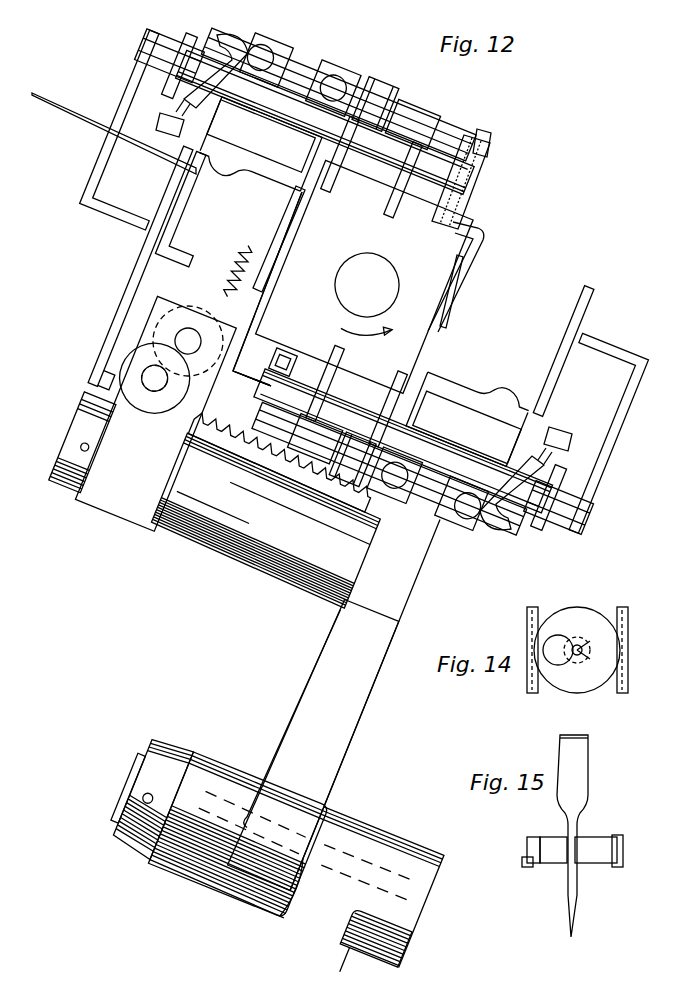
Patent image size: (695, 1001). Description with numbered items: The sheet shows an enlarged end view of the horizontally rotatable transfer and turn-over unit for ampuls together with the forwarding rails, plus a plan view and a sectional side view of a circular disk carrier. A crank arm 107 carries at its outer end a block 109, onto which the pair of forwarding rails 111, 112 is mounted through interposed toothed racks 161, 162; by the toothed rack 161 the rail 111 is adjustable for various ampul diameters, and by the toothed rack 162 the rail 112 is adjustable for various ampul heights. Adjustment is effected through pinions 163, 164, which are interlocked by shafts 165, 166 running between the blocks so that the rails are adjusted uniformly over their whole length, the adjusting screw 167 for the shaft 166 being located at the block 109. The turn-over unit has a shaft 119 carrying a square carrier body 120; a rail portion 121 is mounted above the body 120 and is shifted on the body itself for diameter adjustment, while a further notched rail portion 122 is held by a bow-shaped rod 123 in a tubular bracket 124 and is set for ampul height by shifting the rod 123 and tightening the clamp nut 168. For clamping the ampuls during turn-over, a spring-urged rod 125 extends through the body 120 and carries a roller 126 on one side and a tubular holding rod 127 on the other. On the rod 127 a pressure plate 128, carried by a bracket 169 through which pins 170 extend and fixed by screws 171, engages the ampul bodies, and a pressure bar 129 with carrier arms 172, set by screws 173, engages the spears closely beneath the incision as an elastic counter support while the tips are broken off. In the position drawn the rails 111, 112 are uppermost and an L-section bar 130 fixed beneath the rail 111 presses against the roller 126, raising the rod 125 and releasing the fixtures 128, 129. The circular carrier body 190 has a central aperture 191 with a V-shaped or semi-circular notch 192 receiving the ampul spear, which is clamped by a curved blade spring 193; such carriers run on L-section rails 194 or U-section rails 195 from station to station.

In FIG. 12, the crank arm 107 is at (328, 616).
In FIG. 12, the connecting block 109 is at (102, 504).
In FIG. 12, the forwarding rail 111 is at (288, 232).
In FIG. 12, the forwarding rail 112 is at (172, 200).
In FIG. 12, the shaft 119 is at (396, 272).
In FIG. 12, the carrier body 120 is at (484, 242).
In FIG. 12, the rail portion 121 is at (470, 270).
In FIG. 12, the rail portion 122 is at (148, 188).
In FIG. 12, the bow-shaped rod 123 is at (124, 92).
In FIG. 12, the bracket 124 is at (220, 106).
In FIG. 12, the rod 125 is at (478, 181).
In FIG. 12, the roller 126 is at (490, 136).
In FIG. 12, the tubular holding rod 127 is at (296, 60).
In FIG. 12, the pressure plate 128 is at (222, 162).
In FIG. 12, the pressure bar 129 is at (166, 116).
In FIG. 12, the L-section bar 130 is at (236, 378).
In FIG. 12, the toothed rack 161 is at (232, 276).
In FIG. 12, the toothed rack 162 is at (302, 458).
In FIG. 12, the pinion 163 is at (184, 304).
In FIG. 12, the pinion 164 is at (150, 390).
In FIG. 12, the shaft 165 is at (190, 330).
In FIG. 12, the shaft 166 is at (158, 392).
In FIG. 12, the adjusting screw 167 is at (132, 400).
In FIG. 12, the clamp nut 168 is at (188, 36).
In FIG. 12, the bracket 169 is at (372, 84).
In FIG. 12, the pin 170 is at (270, 128).
In FIG. 12, the screw 171 is at (333, 76).
In FIG. 12, the carrier arm 172 is at (228, 40).
In FIG. 12, the screw 173 is at (258, 44).
In FIG. 14, the circular carrier body 190 is at (588, 608).
In FIG. 15, the circular carrier body 190 is at (594, 838).
In FIG. 14, the aperture 191 is at (555, 640).
In FIG. 15, the aperture 191 is at (552, 863).
In FIG. 14, the notch 192 is at (584, 642).
In FIG. 15, the notch 192 is at (576, 862).
In FIG. 14, the blade spring 193 is at (568, 662).
In FIG. 15, the blade spring 193 is at (535, 838).
In FIG. 14, the L-section rail 194 is at (534, 692).
In FIG. 15, the L-section rail 194 is at (524, 866).
In FIG. 14, the U-section rail 195 is at (618, 690).
In FIG. 15, the U-section rail 195 is at (616, 866).